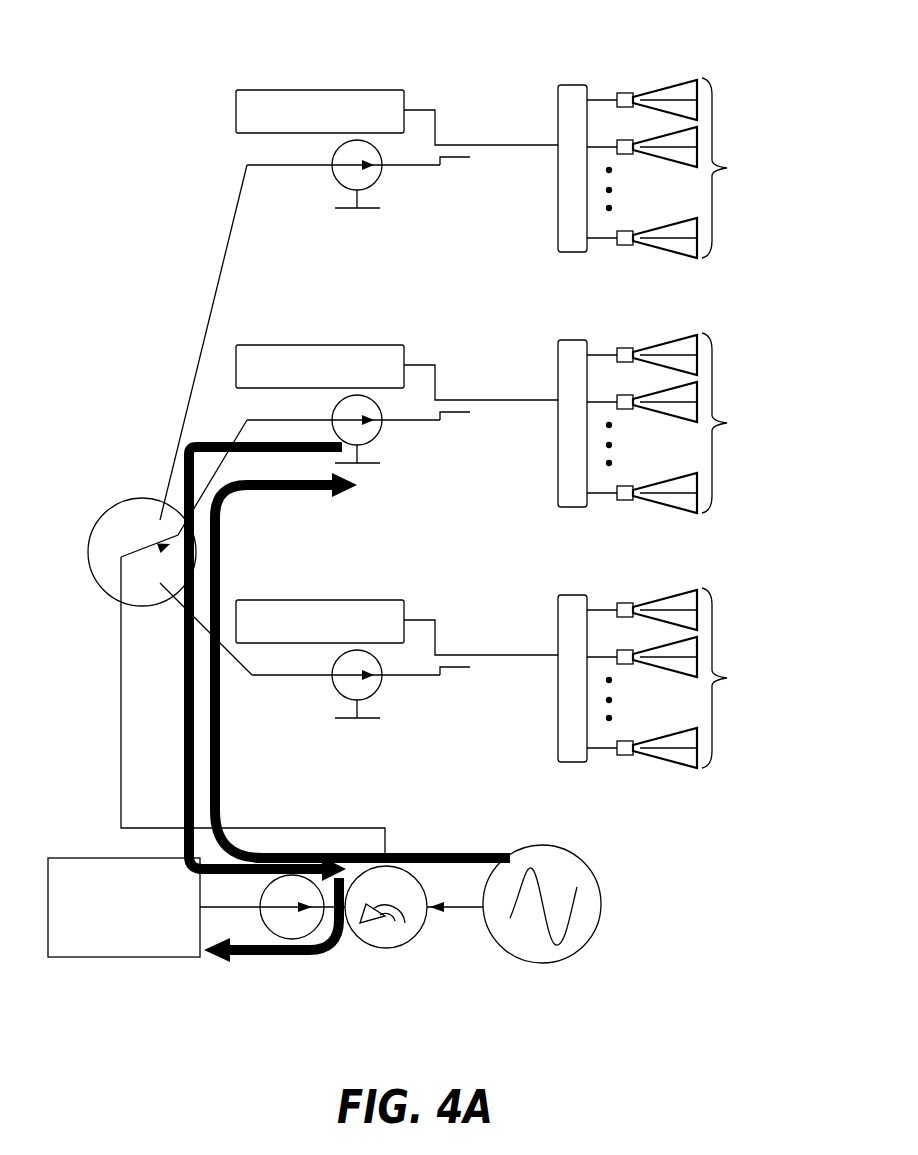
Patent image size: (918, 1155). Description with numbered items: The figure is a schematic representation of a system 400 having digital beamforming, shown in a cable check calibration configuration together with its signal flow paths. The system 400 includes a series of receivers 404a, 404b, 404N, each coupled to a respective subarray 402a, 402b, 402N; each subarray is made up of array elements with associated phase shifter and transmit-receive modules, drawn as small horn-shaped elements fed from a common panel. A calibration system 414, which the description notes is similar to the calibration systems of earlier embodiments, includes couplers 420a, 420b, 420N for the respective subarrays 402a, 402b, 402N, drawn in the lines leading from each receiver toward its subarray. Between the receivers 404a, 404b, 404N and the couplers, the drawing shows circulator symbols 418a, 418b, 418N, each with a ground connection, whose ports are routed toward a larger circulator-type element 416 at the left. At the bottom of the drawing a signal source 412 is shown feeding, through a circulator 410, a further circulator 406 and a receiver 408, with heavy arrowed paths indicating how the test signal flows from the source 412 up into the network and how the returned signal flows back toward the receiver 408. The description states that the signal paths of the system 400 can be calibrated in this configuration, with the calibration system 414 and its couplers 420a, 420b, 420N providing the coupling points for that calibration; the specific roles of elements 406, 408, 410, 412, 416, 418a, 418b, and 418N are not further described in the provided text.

The system 400 is at (478, 40).
The subarray 402a is at (679, 168).
The subarray 402b is at (679, 423).
The subarray 402N is at (680, 678).
The receiver 404a is at (321, 88).
The receiver 404b is at (320, 334).
The receiver 404N is at (320, 589).
The circulator 406 is at (290, 939).
The receiver 408 is at (137, 958).
The circulator 410 is at (385, 949).
The signal source 412 is at (540, 964).
The calibration system 414 is at (175, 739).
The circulator switch 416 is at (125, 500).
The circulator 418a is at (367, 190).
The circulator 418b is at (393, 431).
The circulator 418N is at (394, 686).
The coupler 420a is at (458, 158).
The coupler 420b is at (492, 431).
The coupler 420N is at (492, 685).